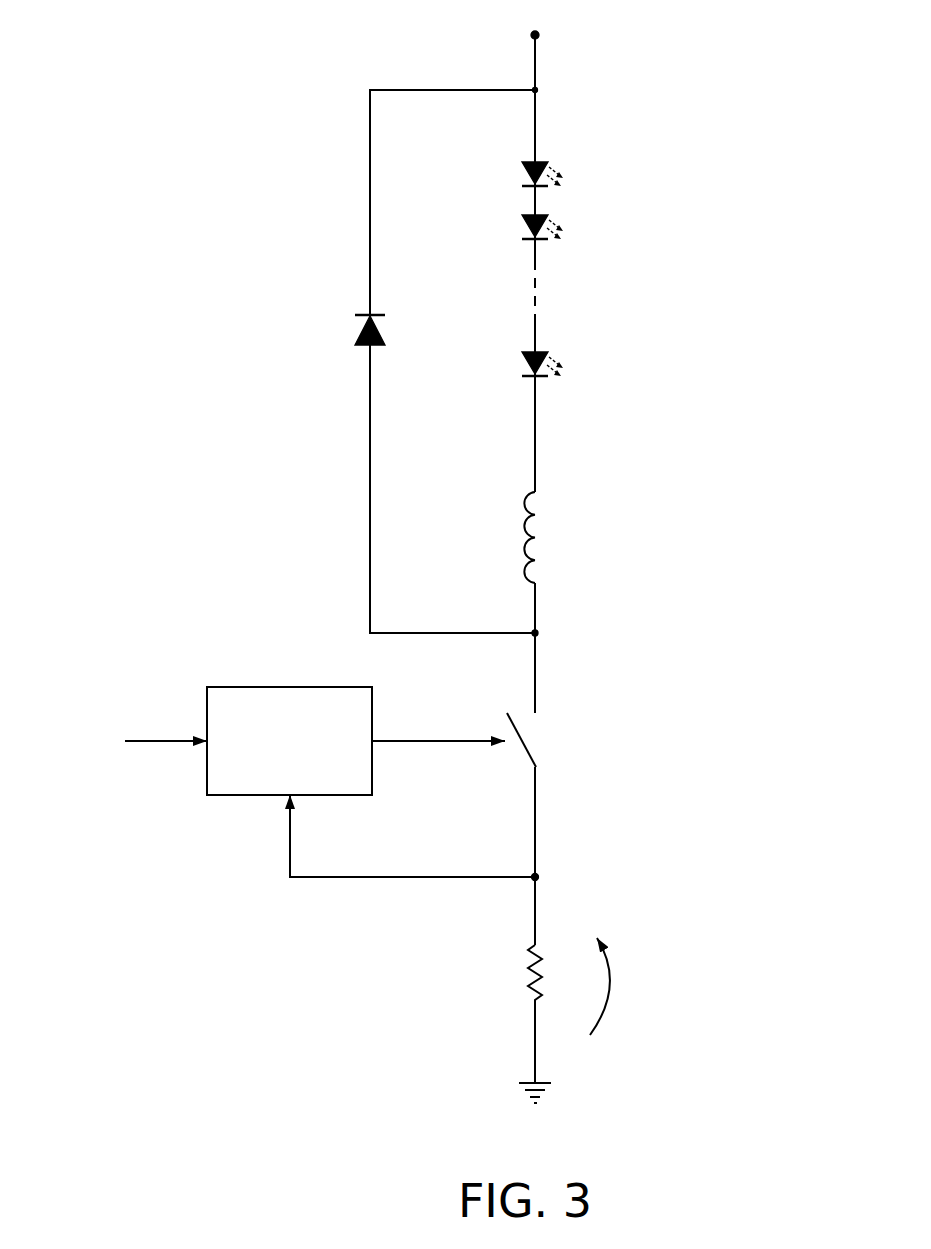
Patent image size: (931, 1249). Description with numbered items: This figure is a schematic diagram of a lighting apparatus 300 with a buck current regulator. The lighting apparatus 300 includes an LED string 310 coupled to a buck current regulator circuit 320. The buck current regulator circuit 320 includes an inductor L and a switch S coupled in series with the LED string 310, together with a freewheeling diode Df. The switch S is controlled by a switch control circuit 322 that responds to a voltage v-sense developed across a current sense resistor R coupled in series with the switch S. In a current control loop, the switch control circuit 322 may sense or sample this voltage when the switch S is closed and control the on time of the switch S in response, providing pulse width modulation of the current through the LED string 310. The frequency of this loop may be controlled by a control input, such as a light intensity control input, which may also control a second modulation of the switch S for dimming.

The lighting apparatus 300 is at (170, 160).
The LED string 310 is at (610, 172).
The buck current regulator circuit 320 is at (654, 486).
The switch control circuit 322 is at (289, 687).